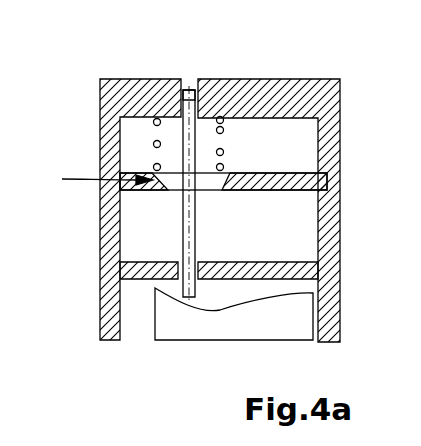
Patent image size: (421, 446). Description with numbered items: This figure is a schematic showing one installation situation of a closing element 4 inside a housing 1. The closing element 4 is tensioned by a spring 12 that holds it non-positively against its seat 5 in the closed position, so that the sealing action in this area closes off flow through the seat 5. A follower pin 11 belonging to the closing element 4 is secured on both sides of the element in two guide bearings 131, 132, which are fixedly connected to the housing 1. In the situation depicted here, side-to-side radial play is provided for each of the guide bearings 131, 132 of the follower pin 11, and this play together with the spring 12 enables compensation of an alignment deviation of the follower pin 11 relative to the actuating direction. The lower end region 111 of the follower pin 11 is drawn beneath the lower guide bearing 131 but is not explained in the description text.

The housing 1 is at (140, 93).
The openings 12 is at (153, 144).
The plate 4 is at (167, 192).
The flow direction arrow 5 is at (99, 178).
The shaft 11 is at (195, 232).
The upper shaft end / bearing 132 is at (191, 79).
The lower bearing plate 131 is at (178, 260).
The shaft base 111 is at (186, 299).